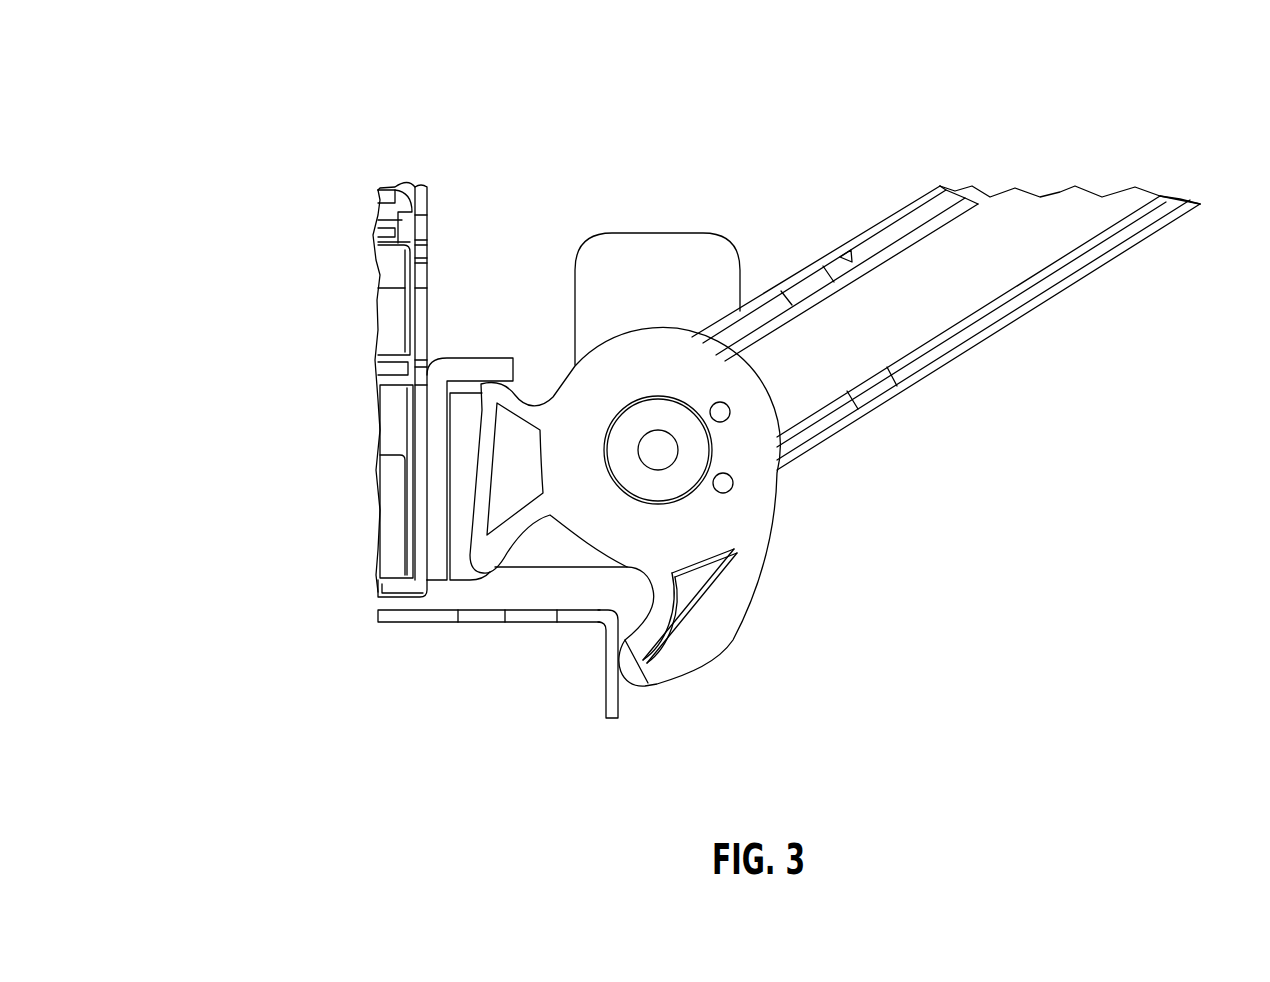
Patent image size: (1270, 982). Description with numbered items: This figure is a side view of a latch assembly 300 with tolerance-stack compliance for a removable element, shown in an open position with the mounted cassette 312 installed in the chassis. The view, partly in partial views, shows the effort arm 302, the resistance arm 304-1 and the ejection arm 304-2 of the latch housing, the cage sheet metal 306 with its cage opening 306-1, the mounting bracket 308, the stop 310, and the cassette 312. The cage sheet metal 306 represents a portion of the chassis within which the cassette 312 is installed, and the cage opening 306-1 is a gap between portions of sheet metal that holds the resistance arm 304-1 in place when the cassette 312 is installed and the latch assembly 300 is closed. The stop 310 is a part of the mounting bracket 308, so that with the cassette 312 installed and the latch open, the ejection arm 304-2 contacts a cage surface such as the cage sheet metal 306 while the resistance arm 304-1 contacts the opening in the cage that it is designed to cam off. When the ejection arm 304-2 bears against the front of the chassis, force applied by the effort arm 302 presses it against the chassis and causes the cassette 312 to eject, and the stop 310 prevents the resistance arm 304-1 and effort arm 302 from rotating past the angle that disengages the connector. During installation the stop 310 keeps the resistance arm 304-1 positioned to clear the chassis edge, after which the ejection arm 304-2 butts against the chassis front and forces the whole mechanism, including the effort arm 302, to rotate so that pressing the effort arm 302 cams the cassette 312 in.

The latch assembly 300 is at (313, 132).
The effort arm 302 is at (967, 257).
The resistance arm 304-1 is at (508, 500).
The ejection arm 304-2 is at (695, 605).
The cage sheet metal 306 is at (615, 702).
The cage opening 306-1 is at (458, 622).
The mounting bracket 308 is at (692, 263).
The stop 310 is at (471, 372).
The cassette 312 is at (385, 512).